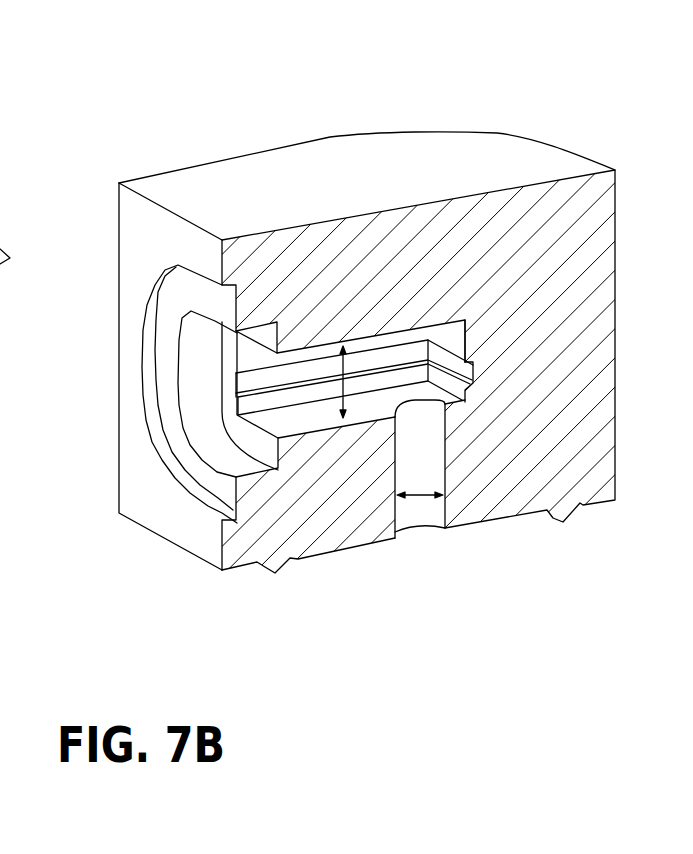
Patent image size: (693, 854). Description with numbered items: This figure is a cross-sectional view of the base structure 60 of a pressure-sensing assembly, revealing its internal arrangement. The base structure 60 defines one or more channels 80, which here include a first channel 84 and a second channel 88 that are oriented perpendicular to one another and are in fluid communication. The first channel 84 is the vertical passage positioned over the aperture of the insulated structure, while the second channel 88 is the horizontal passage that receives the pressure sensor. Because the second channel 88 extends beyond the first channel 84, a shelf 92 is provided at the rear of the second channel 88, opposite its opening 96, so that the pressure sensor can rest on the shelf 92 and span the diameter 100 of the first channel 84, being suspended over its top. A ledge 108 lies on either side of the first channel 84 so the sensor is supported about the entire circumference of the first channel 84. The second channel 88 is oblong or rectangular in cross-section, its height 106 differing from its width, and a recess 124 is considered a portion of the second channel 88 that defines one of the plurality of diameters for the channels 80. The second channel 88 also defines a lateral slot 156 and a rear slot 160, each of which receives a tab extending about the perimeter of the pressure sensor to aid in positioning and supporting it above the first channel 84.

The base structure 60 is at (539, 111).
The channels 80 is at (452, 450).
The first channel 84 is at (438, 513).
The second channel 88 is at (398, 334).
The shelf 92 is at (468, 342).
The opening 96 is at (243, 432).
The diameter 100 is at (414, 497).
The height 106 is at (341, 382).
The ledge 108 is at (418, 345).
The recess 124 is at (217, 497).
The lateral slot 156 is at (243, 386).
The rear slot 160 is at (475, 372).